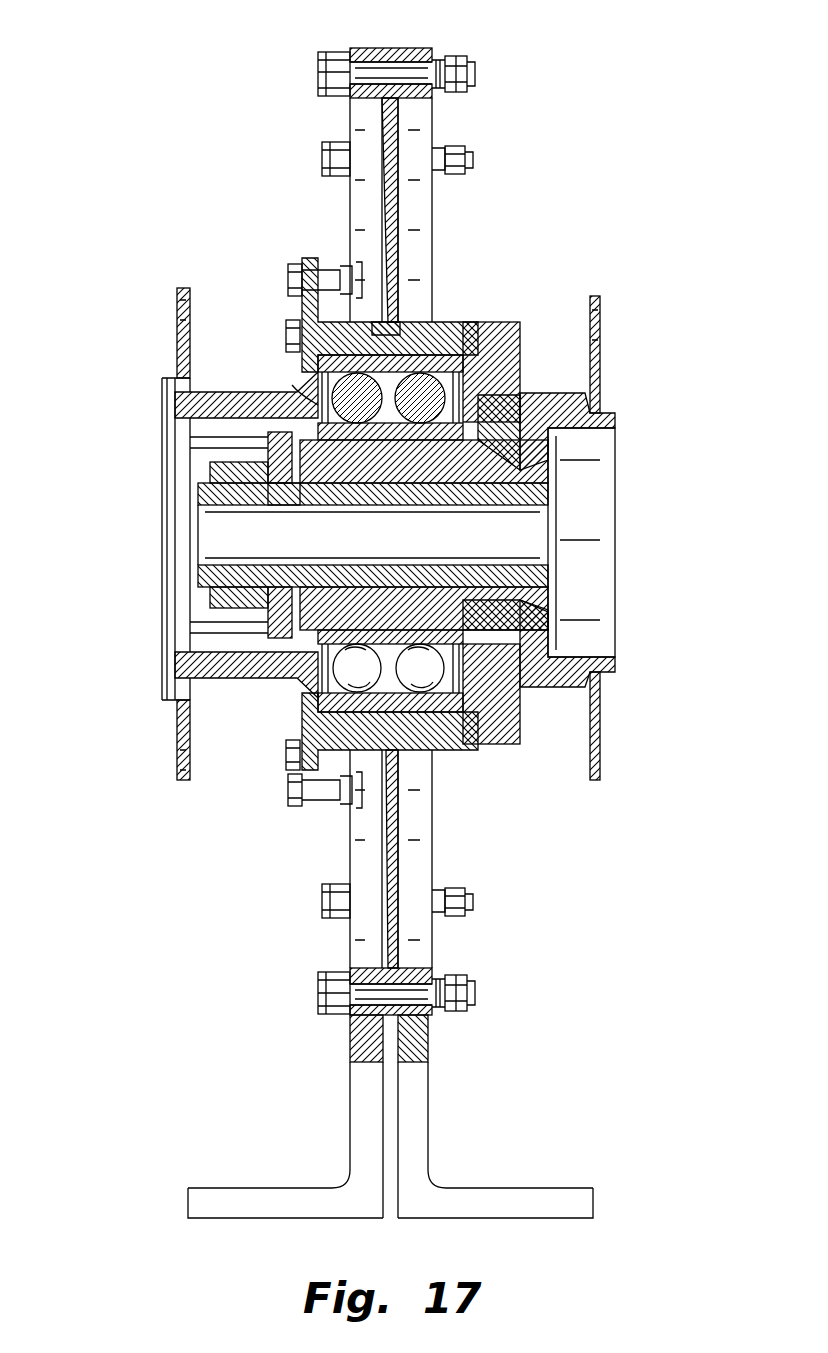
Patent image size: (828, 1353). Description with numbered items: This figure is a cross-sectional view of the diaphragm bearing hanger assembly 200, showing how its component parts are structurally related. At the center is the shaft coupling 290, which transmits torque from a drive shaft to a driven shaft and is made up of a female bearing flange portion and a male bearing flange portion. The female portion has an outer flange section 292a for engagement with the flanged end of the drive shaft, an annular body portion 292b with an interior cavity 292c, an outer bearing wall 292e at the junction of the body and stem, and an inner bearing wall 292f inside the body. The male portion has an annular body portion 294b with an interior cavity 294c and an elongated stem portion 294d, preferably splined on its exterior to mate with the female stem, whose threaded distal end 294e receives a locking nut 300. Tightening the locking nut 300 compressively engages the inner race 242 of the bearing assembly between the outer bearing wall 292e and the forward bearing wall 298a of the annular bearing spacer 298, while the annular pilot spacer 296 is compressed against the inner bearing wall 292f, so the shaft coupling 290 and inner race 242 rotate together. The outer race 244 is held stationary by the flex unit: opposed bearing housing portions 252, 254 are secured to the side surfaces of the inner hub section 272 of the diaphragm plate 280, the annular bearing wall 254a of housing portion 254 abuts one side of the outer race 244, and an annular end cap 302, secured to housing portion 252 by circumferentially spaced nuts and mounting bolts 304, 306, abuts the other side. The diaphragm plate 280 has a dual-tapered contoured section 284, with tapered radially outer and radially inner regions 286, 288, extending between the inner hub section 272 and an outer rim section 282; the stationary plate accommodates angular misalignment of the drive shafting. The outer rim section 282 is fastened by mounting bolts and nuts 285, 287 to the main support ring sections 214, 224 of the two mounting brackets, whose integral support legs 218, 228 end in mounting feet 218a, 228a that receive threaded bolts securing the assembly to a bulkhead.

The bearing hanger assembly 200 is at (160, 138).
The main support ring section 214 is at (352, 1050).
The support leg 218 is at (358, 1136).
The mounting foot 218a is at (206, 1200).
The main support ring section 224 is at (420, 1045).
The support leg 228 is at (416, 1140).
The mounting foot 228a is at (560, 1205).
The inner race 242 is at (386, 485).
The outer race 244 is at (420, 790).
The bearing housing portion 252 is at (320, 845).
The bearing housing portion 254 is at (510, 345).
The annular bearing wall 254a is at (455, 720).
The inner hub section 272 is at (406, 322).
The diaphragm plate 280 is at (370, 212).
The outer rim section 282 is at (386, 50).
The dual-tapered contoured section 284 is at (400, 220).
The mounting bolt 285 is at (322, 58).
The tapered radially outer region 286 is at (410, 142).
The nut 287 is at (446, 58).
The tapered radially inner region 288 is at (400, 296).
The shaft coupling 290 is at (648, 660).
The outer flange section 292a is at (178, 746).
The annular body portion 292b is at (236, 672).
The interior cavity 292c is at (185, 425).
The outer bearing wall 292e is at (298, 388).
The inner bearing wall 292f is at (280, 500).
The annular body portion 294b is at (560, 690).
The interior cavity 294c is at (575, 650).
The elongated stem portion 294d is at (412, 490).
The distal end 294e is at (470, 612).
The annular pilot spacer 296 is at (250, 436).
The annular bearing spacer 298 is at (486, 410).
The forward bearing wall 298a is at (496, 416).
The locking nut 300 is at (212, 478).
The annular end cap 302 is at (300, 790).
The nut 304 is at (330, 300).
The mounting bolt 306 is at (355, 264).